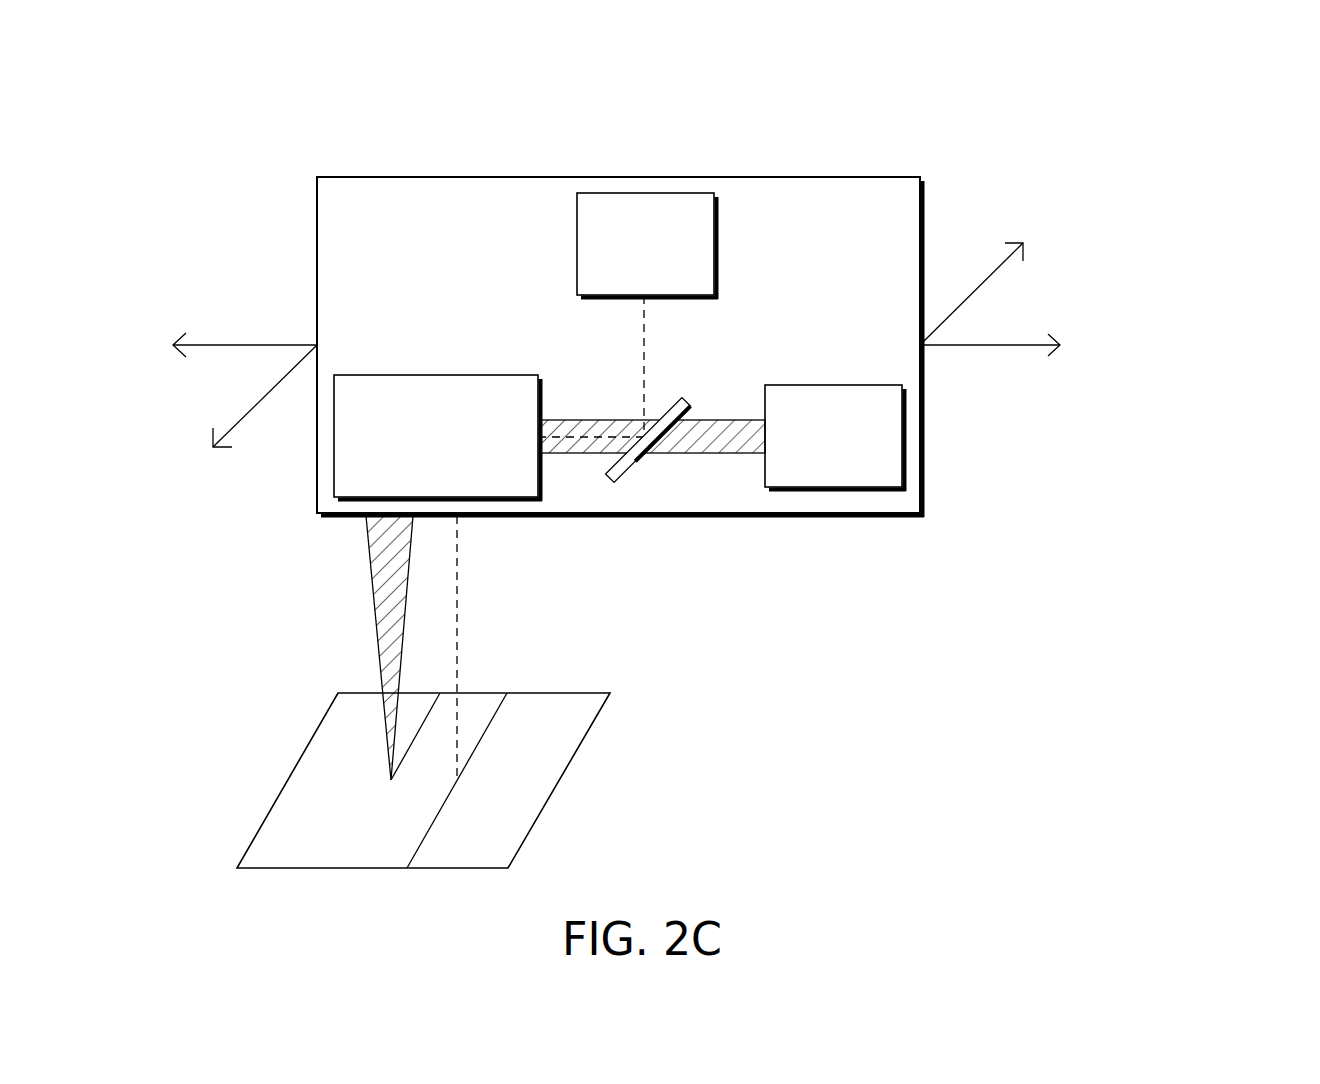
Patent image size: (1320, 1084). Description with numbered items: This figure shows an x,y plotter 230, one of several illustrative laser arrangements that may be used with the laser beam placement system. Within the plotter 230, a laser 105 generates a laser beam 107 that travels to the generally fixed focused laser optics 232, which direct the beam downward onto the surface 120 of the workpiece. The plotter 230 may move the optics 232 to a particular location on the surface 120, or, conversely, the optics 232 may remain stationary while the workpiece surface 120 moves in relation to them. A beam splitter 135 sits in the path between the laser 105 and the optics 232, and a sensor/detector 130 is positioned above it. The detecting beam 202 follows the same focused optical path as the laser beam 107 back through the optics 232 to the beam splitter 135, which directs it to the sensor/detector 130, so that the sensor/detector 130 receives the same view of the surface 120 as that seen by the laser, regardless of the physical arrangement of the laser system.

The x,y plotter 230 is at (1115, 128).
The sensor/detector 130 is at (660, 270).
The fixed focused laser optics 232 is at (452, 478).
The laser 105 is at (850, 463).
The beam splitter 135 is at (684, 404).
The laser beam 107 is at (380, 647).
The detecting beam 202 is at (458, 673).
The surface 120 is at (573, 753).